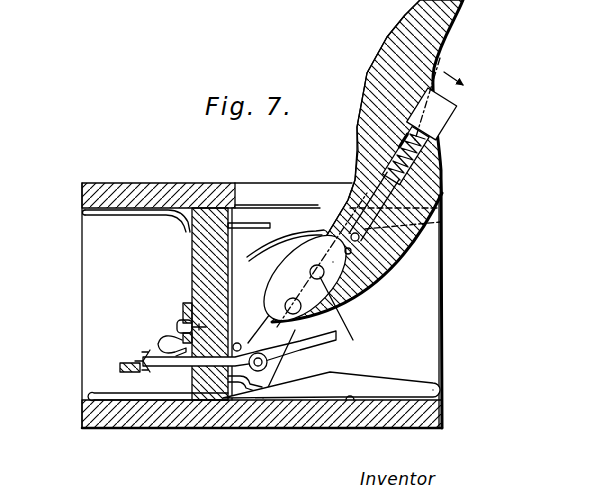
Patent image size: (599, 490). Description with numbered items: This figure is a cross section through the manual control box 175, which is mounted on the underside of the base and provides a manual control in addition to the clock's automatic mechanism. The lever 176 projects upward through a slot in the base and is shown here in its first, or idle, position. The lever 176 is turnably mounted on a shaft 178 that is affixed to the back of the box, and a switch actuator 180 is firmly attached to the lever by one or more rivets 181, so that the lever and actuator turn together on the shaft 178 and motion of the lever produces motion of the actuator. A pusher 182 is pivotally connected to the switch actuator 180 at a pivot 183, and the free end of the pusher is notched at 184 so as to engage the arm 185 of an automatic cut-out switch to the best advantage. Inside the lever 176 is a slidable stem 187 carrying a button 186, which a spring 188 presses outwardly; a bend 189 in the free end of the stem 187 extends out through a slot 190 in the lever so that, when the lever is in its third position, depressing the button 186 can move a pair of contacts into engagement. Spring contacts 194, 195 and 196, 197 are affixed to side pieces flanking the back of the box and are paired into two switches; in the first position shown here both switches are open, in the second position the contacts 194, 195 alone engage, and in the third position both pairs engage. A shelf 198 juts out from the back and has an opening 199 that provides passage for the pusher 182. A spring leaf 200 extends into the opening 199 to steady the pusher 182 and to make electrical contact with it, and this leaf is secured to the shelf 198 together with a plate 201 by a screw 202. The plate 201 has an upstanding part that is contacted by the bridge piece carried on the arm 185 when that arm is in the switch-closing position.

The control box 175 is at (100, 178).
The lever 176 is at (388, 42).
The shaft 178 is at (322, 318).
The switch actuator 180 is at (333, 373).
The rivets 181 is at (322, 278).
The pusher 182 is at (180, 368).
The pivotal connection 183 is at (320, 372).
The notch 184 is at (146, 372).
The arm 185 is at (140, 363).
The button 186 is at (430, 98).
The stem 187 is at (383, 180).
The spring 188 is at (392, 148).
The bend 189 is at (333, 262).
The slot 190 is at (369, 278).
The spring contact 194 is at (405, 387).
The spring contact 195 is at (142, 402).
The spring contact 196 is at (346, 203).
The spring contact 197 is at (85, 212).
The shelf 198 is at (190, 248).
The opening 199 is at (217, 388).
The spring leaf 200 is at (168, 342).
The plate 201 is at (190, 310).
The screw 202 is at (178, 325).